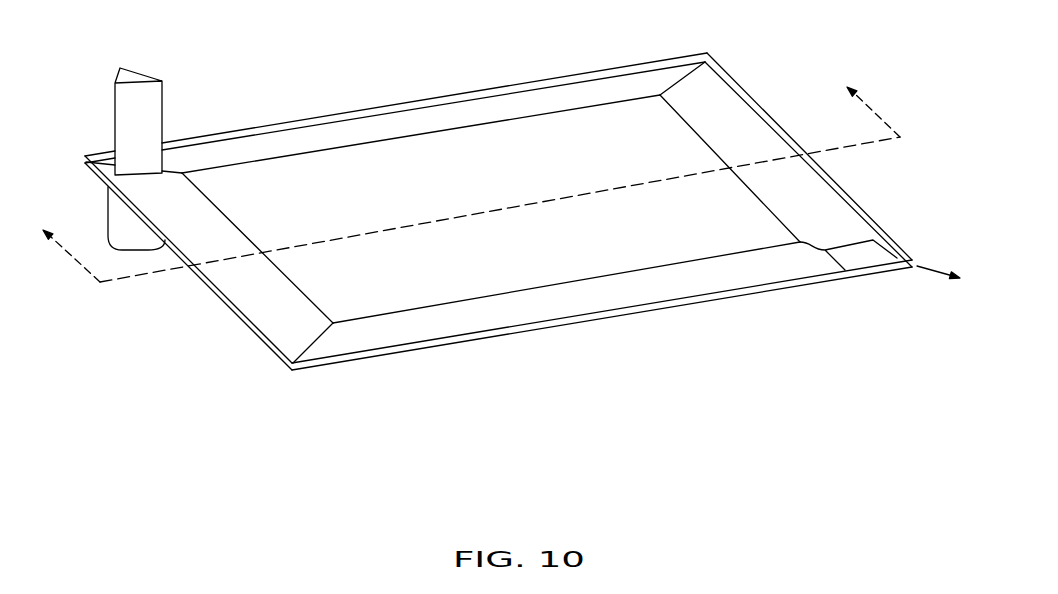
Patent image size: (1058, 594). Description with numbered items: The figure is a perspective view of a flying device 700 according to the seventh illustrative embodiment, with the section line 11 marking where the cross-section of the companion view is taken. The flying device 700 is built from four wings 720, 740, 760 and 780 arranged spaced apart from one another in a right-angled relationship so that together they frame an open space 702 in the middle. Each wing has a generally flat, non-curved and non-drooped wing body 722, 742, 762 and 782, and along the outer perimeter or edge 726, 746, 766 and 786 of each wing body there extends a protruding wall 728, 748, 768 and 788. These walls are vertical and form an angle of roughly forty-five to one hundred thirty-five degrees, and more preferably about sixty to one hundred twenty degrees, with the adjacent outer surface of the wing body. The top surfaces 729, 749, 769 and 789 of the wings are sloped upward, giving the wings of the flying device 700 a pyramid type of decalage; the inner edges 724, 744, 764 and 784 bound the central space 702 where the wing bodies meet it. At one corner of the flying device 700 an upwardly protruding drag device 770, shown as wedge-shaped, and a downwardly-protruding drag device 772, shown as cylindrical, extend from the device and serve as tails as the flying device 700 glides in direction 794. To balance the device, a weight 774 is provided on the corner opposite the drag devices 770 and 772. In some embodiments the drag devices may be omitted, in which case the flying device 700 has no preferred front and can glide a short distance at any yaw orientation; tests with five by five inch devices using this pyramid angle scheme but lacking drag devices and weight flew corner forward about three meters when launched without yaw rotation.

The section line 11- 11 is at (472, 184).
The flying device 700 is at (300, 51).
The space 702 is at (520, 144).
The wing 720 is at (284, 113).
The wing body 722 is at (270, 142).
The rear wall inner edge 724 is at (360, 145).
The outer perimeter or edge 726 is at (332, 124).
The protruding wall 728 is at (607, 71).
The top surface 729 is at (547, 105).
The wing 740 is at (846, 171).
The wing body 742 is at (822, 215).
The right side wall inner edge 744 is at (748, 192).
The outer perimeter or edge 746 is at (745, 106).
The protruding wall 748 is at (725, 70).
The top surface 749 is at (705, 125).
The wing 760 is at (769, 304).
The wing body 762 is at (657, 290).
The front wall inner edge 764 is at (627, 273).
The outer perimeter or edge 766 is at (398, 343).
The protruding wall 768 is at (825, 278).
The top surface 769 is at (470, 320).
The upwardly protruding drag device 770 is at (128, 114).
The downwardly-protruding drag device 772 is at (117, 223).
The weight 774 is at (855, 248).
The wing 780 is at (214, 311).
The wing body 782 is at (277, 325).
The left side wall rim surface 784 is at (313, 297).
The outer perimeter or edge 786 is at (292, 364).
The protruding wall 788 is at (202, 285).
The top surface 789 is at (227, 218).
The direction 794 is at (925, 272).